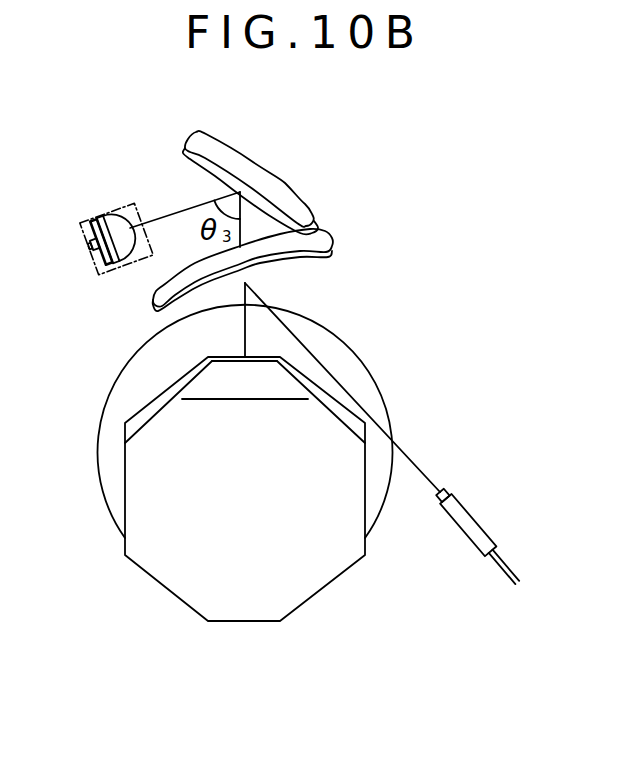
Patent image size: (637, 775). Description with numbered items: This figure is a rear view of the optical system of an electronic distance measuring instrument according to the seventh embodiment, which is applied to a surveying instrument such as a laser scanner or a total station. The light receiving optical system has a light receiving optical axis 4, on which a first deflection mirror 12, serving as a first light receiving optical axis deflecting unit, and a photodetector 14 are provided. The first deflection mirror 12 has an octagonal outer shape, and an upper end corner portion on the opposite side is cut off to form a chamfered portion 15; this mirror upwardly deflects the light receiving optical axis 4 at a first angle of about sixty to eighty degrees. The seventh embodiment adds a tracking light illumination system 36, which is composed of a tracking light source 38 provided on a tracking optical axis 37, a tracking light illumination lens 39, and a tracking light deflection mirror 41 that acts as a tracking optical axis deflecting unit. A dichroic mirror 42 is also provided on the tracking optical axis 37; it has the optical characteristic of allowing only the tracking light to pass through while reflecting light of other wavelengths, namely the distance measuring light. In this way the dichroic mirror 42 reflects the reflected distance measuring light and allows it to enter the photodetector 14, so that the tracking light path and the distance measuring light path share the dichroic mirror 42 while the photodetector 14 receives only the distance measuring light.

The light receiving optical axis 4 is at (338, 387).
The first deflection mirror 12 is at (328, 585).
The photodetector 14 is at (465, 507).
The chamfered portion 15 is at (233, 383).
The tracking light illumination system 36 is at (137, 190).
The tracking optical axis 37 is at (175, 210).
The tracking light source 38 is at (88, 243).
The tracking light illumination lens 39 is at (127, 260).
The tracking light deflection mirror 41 is at (289, 185).
The dichroic mirror 42 is at (331, 257).